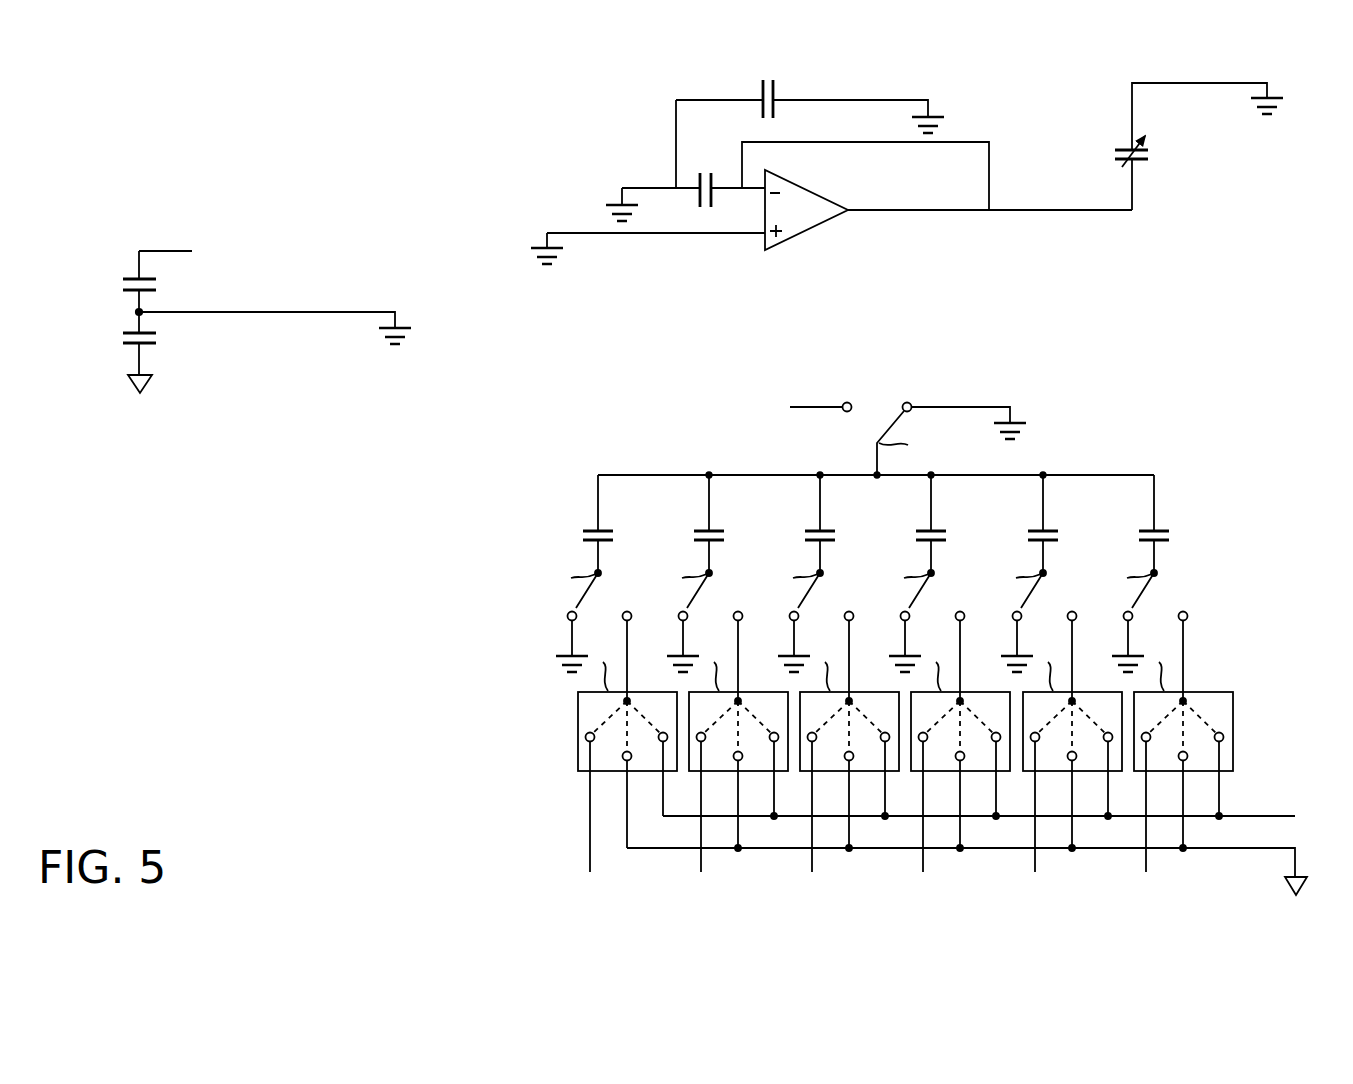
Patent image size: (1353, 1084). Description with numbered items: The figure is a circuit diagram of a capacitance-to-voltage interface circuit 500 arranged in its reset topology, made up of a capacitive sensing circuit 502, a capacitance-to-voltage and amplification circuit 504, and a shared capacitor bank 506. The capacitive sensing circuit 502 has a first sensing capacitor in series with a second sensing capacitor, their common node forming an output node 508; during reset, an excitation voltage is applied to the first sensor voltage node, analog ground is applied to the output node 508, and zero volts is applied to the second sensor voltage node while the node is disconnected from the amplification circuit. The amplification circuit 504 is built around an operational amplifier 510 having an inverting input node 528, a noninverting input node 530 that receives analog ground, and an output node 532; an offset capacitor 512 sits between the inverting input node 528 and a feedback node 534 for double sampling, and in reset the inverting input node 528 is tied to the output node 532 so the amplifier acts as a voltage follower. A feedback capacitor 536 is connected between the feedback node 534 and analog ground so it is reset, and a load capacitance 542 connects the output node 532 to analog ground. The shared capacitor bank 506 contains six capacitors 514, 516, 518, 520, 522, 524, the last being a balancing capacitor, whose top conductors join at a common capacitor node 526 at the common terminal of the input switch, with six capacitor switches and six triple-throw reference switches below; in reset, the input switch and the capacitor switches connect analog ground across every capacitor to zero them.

The circuit 500 is at (285, 747).
The capacitive sensing circuit 502 is at (291, 196).
The capacitance-to-voltage and amplification (C2V/AMP) circuit 504 is at (600, 100).
The shared capacitor bank 506 is at (490, 515).
The output node 508 is at (291, 312).
The operational amplifier 510 is at (818, 226).
The offset capacitor 512 is at (700, 201).
The capacitor 514 is at (605, 531).
The capacitor 516 is at (716, 531).
The capacitor 518 is at (827, 531).
The capacitor 520 is at (938, 531).
The capacitor 522 is at (1050, 531).
The capacitor 524 is at (1161, 531).
The common capacitor node 526 is at (875, 475).
The inverting input node 528 is at (742, 188).
The noninverting input node 530 is at (733, 234).
The output node 532 is at (989, 211).
The feedback node 534 is at (676, 188).
The feedback capacitor 536 is at (775, 111).
The load capacitance 542 is at (1147, 163).